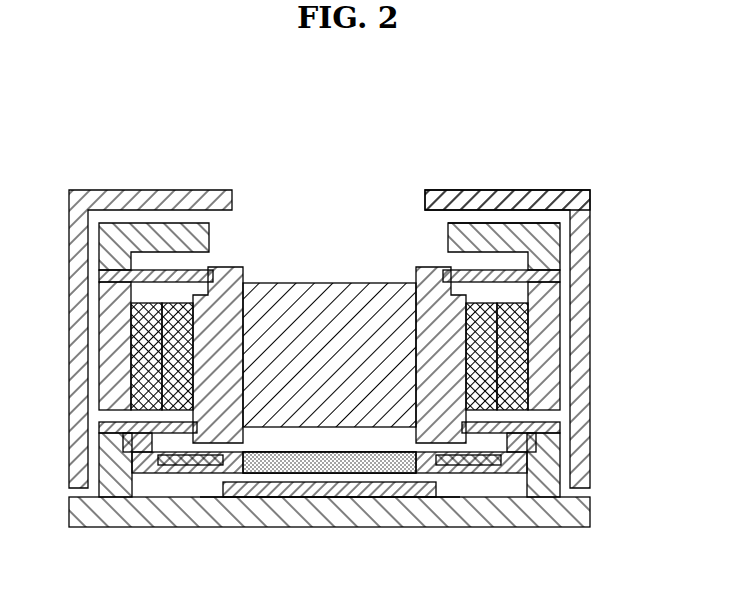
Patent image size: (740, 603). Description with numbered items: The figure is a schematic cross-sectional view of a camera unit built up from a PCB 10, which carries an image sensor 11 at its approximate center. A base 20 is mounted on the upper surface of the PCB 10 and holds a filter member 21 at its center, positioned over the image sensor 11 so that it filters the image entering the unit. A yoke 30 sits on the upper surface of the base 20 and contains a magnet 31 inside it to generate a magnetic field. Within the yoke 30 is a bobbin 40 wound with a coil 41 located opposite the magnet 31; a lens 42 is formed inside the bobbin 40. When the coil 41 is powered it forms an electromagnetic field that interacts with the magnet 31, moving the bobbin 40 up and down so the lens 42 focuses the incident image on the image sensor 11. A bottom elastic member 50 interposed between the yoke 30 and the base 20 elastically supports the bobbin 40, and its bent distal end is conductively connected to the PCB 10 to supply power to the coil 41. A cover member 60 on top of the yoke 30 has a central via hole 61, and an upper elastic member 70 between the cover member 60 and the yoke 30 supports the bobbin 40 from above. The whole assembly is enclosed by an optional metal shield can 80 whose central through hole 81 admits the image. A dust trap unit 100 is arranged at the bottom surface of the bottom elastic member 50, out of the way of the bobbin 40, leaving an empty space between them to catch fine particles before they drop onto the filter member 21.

The PCB 10 is at (573, 512).
The image sensor 11 is at (377, 497).
The base 20 is at (550, 466).
The filter member 21 is at (318, 476).
The yoke 30 is at (550, 358).
The magnet 31 is at (140, 398).
The bobbin 40 is at (470, 322).
The coil 41 is at (175, 398).
The lens 42 is at (321, 283).
The bottom elastic member 50 is at (547, 424).
The cover member 60 is at (560, 248).
The via hole 61 is at (448, 239).
The upper elastic member 70 is at (560, 280).
The shield can 80 is at (583, 214).
The through hole 81 is at (425, 196).
The dust trap unit 100 is at (467, 463).